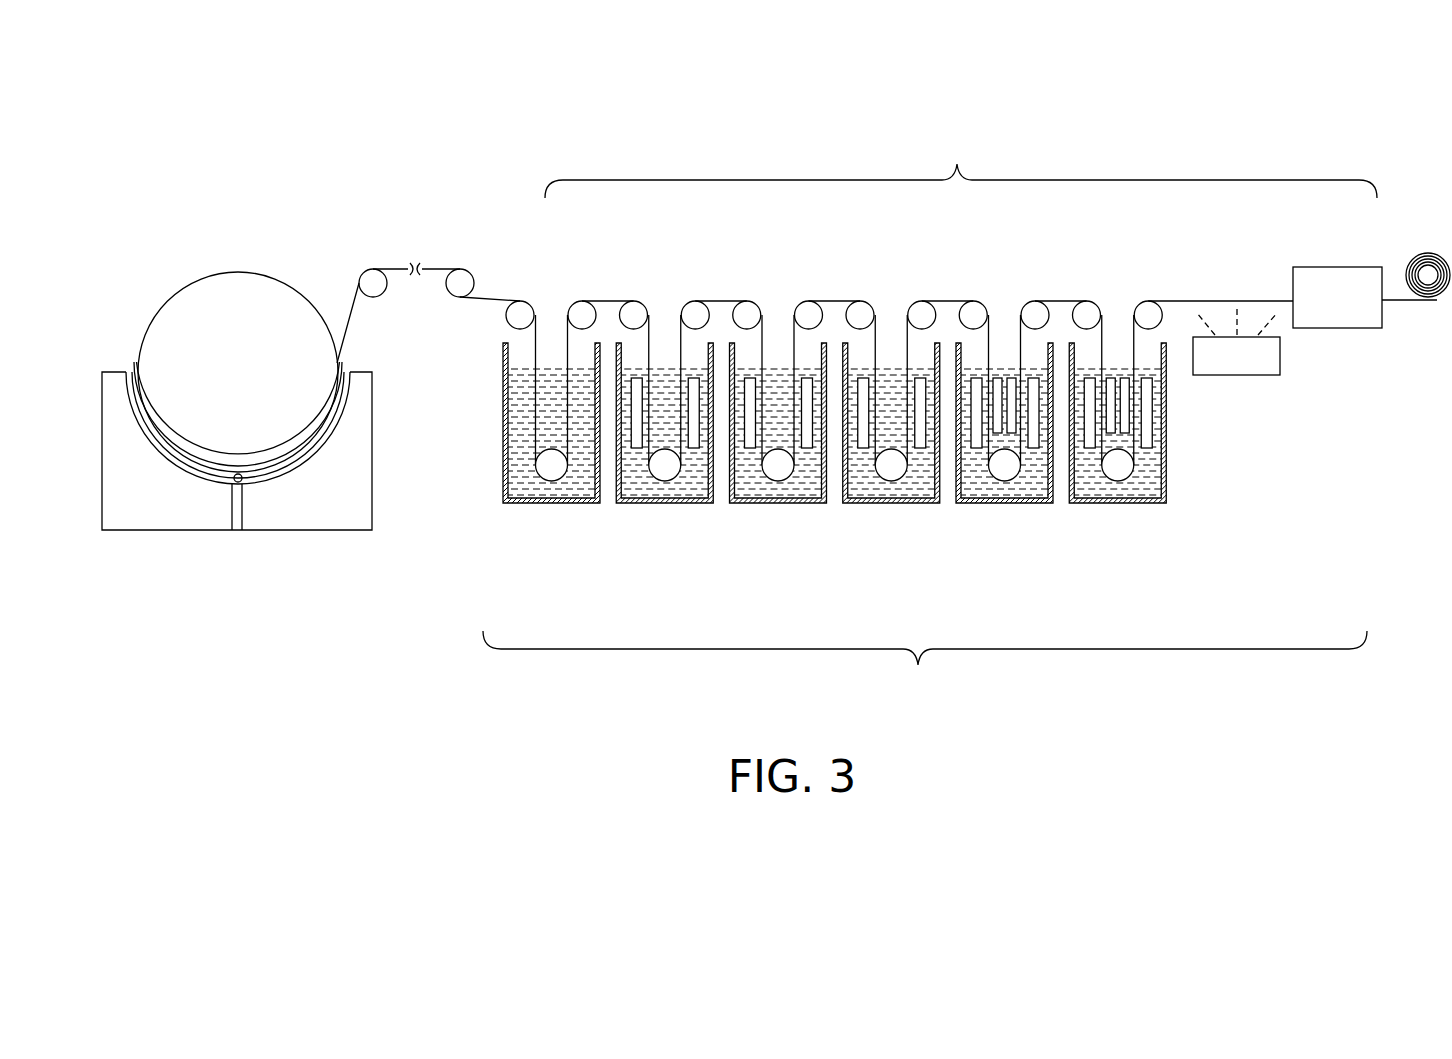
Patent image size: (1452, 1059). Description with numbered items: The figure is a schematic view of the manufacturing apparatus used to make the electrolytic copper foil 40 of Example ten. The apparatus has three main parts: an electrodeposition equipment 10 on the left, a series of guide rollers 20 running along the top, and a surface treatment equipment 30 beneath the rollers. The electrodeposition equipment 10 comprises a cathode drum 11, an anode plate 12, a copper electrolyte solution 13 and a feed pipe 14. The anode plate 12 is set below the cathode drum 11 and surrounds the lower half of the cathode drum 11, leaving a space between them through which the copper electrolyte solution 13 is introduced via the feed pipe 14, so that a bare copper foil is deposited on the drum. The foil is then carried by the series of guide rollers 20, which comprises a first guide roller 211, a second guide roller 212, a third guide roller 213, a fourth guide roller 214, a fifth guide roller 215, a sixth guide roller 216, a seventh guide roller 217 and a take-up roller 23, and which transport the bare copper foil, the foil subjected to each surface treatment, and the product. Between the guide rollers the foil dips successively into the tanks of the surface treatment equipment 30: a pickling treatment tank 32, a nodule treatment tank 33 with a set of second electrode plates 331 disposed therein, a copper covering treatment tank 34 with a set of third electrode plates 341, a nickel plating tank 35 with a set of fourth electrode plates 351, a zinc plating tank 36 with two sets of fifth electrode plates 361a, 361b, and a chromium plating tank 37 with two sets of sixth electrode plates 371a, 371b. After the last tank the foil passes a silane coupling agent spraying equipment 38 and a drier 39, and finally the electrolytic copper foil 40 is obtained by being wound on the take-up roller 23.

The electrodeposition equipment 10 is at (152, 222).
The cathode drum 11 is at (210, 290).
The anode plate 12 is at (345, 385).
The copper electrolyte solution 13 is at (137, 380).
The feed pipe 14 is at (243, 481).
The series of guide rollers 20 is at (961, 231).
The first guide roller 211 is at (520, 312).
The second guide roller 212 is at (582, 312).
The third guide roller 213 is at (695, 312).
The fourth guide roller 214 is at (809, 312).
The fifth guide roller 215 is at (922, 312).
The sixth guide roller 216 is at (1035, 312).
The seventh guide roller 217 is at (1148, 312).
The take-up roller 23 is at (1420, 265).
The surface treatment equipment 30 is at (925, 665).
The pickling treatment tank 32 is at (537, 490).
The nodule treatment tank 33 is at (627, 492).
The second electrode plates 331 is at (694, 450).
The copper covering treatment tank 34 is at (740, 492).
The third electrode plates 341 is at (807, 450).
The nickel plating tank 35 is at (853, 492).
The fourth electrode plates 351 is at (920, 450).
The zinc plating tank 36 is at (970, 493).
The fifth electrode plates 361a is at (998, 435).
The fifth electrode plates 361b is at (1034, 450).
The chromium plating tank 37 is at (1160, 485).
The sixth electrode plates 371a is at (1111, 435).
The sixth electrode plates 371b is at (1147, 450).
The silane coupling agent spraying equipment 38 is at (1223, 372).
The drier 39 is at (1333, 322).
The electrolytic copper foil 40 is at (1397, 312).